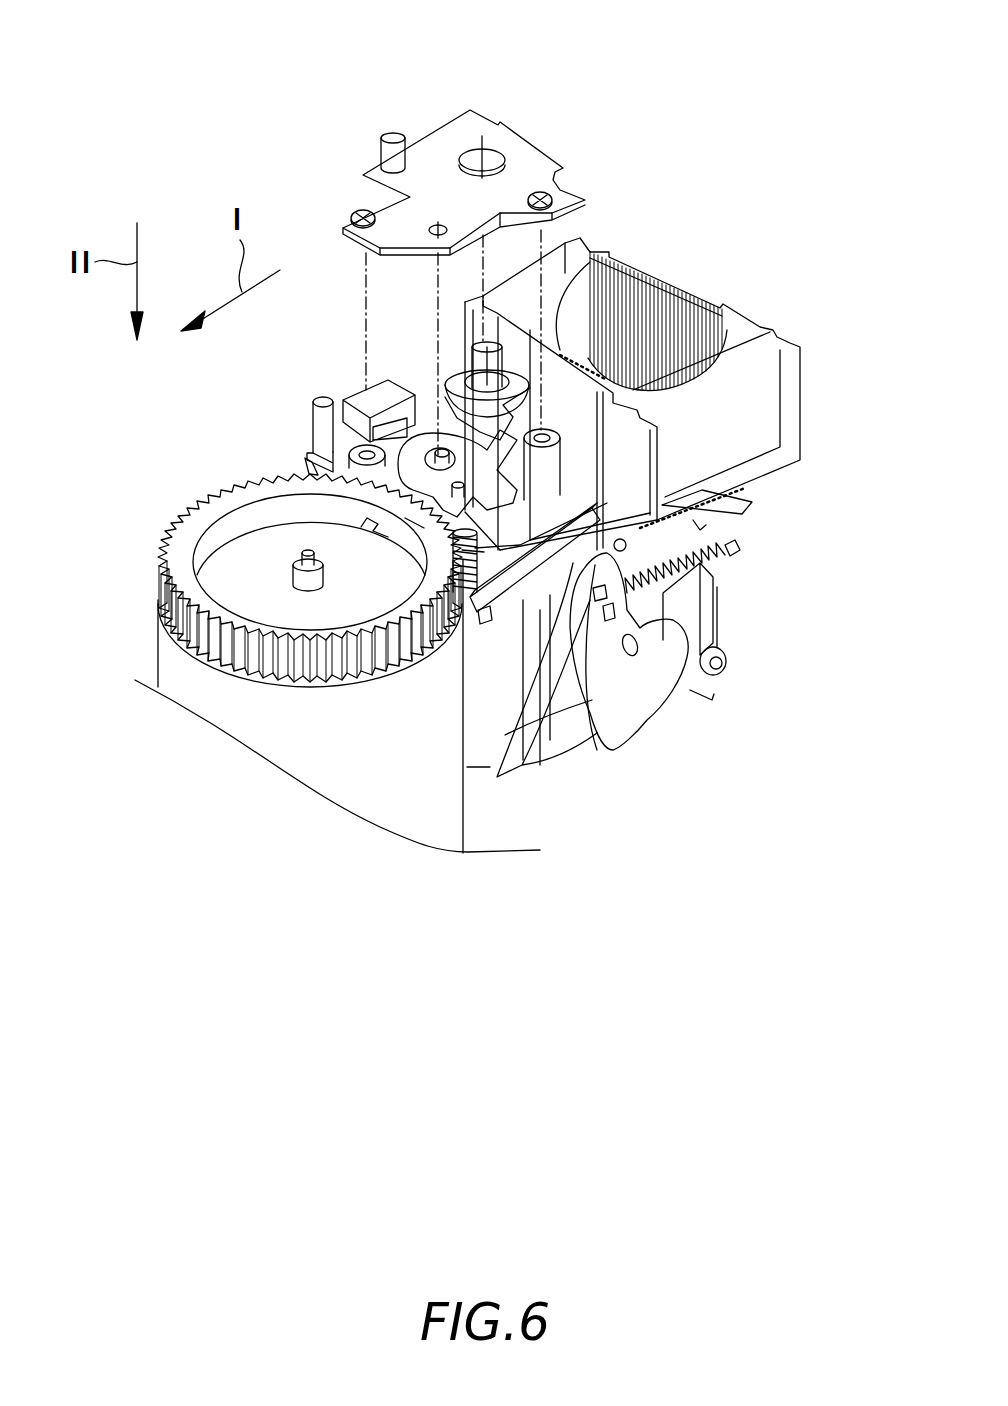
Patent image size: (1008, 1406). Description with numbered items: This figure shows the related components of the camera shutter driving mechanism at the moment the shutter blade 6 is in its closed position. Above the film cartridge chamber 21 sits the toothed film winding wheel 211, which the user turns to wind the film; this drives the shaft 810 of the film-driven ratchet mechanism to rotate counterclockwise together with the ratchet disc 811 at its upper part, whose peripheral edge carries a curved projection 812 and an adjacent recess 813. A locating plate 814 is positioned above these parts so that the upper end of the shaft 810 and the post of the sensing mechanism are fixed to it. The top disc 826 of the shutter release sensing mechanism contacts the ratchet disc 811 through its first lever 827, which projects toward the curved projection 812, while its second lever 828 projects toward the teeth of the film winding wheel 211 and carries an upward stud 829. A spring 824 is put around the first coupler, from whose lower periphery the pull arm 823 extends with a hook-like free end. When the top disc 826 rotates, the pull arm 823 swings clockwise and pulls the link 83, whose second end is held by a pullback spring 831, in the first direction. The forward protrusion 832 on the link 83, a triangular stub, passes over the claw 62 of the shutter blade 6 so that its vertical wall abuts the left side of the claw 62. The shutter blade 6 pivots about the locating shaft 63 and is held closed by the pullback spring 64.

The locating plate 814 is at (470, 118).
The curved projection 812 is at (548, 375).
The shaft 810 is at (446, 385).
The ratchet disc 811 is at (447, 405).
The recess 813 is at (415, 375).
The top disc 826 is at (310, 466).
The film winding wheel 211 is at (200, 525).
The film cartridge chamber 21 is at (245, 703).
The stud 829 is at (470, 470).
The second lever 828 is at (414, 523).
The first lever 827 is at (500, 438).
The spring 824 is at (466, 620).
The pull arm 823 is at (474, 555).
The link 83 is at (468, 620).
The forward protrusion 832 is at (540, 600).
The pullback spring 64 is at (710, 560).
The claw 62 is at (700, 593).
The pullback spring 831 is at (740, 513).
The shutter blade 6 is at (640, 713).
The locating shaft 63 is at (610, 705).